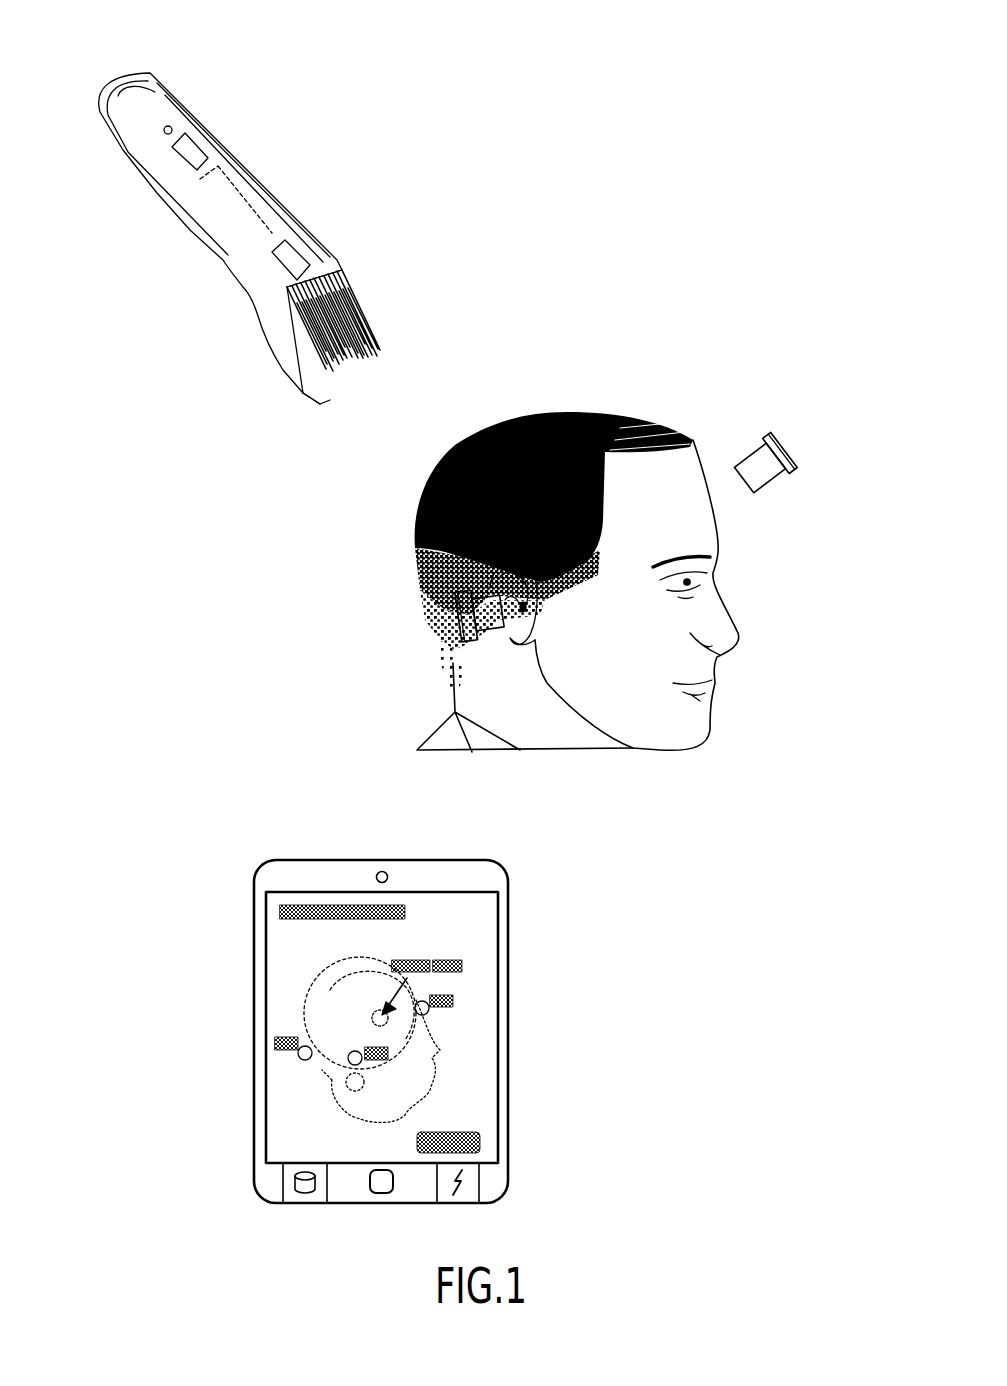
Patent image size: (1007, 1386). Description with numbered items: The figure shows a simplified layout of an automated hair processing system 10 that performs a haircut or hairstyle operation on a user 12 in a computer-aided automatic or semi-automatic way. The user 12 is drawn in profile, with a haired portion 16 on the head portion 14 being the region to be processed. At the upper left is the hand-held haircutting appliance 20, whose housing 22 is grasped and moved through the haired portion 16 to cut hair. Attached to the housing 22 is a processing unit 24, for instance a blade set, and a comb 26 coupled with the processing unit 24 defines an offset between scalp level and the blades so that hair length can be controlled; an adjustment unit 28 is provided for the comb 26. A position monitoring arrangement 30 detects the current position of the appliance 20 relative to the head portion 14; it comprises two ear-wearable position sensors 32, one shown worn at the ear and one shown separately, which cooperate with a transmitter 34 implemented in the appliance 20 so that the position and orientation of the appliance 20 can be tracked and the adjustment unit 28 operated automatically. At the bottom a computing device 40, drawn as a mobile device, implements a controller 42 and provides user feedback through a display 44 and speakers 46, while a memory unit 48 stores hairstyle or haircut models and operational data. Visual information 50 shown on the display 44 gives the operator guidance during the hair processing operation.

The automated hair processing system 10 is at (586, 106).
The user 12 is at (420, 622).
The head portion 14 is at (680, 522).
The haired portion 16 is at (537, 411).
The haircutting appliance 20 is at (158, 220).
The housing 22 is at (205, 157).
The processing unit 24 is at (356, 318).
The comb 26 is at (317, 398).
The adjustment unit 28 is at (298, 262).
The position monitoring arrangement 30 is at (604, 242).
The position sensors 32 is at (756, 452).
The transmitter 34 is at (202, 150).
The computing device 40 is at (522, 992).
The controller 42 is at (473, 1180).
The display 44 is at (277, 938).
The speakers 46 is at (380, 870).
The memory unit 48 is at (282, 1170).
The visual information 50 is at (347, 1010).